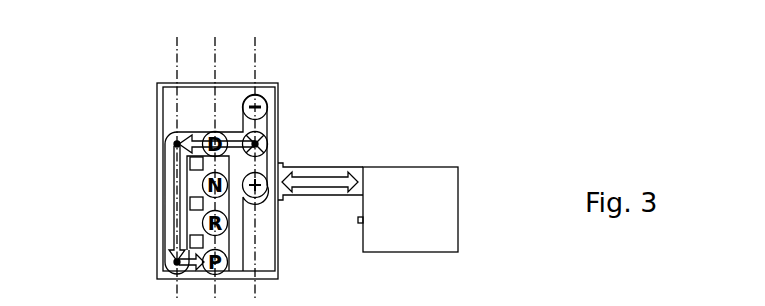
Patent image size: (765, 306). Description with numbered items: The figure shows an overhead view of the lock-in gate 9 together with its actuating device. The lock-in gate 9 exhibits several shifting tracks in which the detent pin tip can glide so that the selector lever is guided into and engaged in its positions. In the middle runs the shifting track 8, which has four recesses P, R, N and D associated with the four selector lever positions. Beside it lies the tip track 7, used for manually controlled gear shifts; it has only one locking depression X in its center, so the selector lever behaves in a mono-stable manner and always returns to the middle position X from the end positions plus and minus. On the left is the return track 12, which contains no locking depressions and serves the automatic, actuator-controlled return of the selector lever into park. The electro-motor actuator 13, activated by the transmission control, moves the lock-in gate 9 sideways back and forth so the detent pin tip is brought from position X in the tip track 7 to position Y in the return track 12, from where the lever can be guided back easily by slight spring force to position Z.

The tip track 7 is at (255, 57).
The shifting track 8 is at (215, 57).
The return track 12 is at (177, 57).
The lock-in gate 9 is at (268, 264).
The actuator 13 is at (410, 208).
The locking depression X is at (255, 144).
The position Y is at (177, 143).
The position Z is at (177, 261).